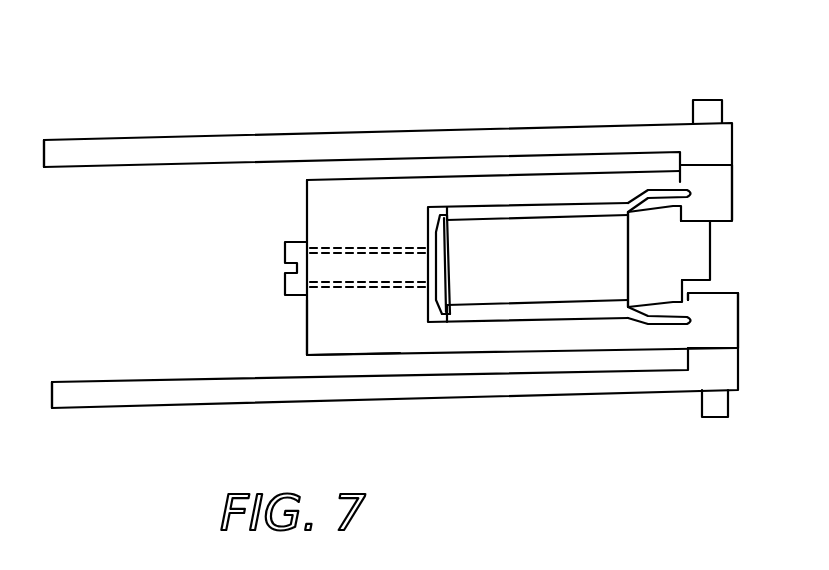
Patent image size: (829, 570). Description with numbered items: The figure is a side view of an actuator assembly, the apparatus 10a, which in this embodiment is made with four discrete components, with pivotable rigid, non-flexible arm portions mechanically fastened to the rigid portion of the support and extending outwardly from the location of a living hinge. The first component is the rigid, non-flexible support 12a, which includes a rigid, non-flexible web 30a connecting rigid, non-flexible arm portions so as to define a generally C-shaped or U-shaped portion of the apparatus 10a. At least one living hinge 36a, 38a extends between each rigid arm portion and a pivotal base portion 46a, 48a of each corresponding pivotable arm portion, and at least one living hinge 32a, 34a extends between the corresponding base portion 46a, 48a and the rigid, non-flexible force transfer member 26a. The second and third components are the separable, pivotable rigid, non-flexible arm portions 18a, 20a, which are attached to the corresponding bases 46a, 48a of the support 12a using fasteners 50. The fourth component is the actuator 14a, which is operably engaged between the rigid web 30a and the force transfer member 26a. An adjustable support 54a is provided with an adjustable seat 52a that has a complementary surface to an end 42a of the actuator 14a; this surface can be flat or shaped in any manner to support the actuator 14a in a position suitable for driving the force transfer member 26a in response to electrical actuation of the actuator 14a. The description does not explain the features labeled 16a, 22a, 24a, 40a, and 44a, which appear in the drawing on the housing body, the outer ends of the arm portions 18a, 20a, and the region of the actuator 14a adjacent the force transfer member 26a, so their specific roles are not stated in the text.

The apparatus 10a is at (365, 63).
The rigid, non-flexible support 12a is at (405, 166).
The actuator 14a is at (536, 297).
The housing 16a is at (320, 213).
The pivotable rigid, non-flexible arm portion 18a is at (102, 137).
The pivotable rigid, non-flexible arm portion 20a is at (145, 400).
The upper rail end 22a is at (78, 168).
The lower rail end 24a is at (93, 380).
The rigid, non-flexible force transfer member 26a is at (715, 268).
The rigid, non-flexible web 30a is at (313, 332).
The living hinge 32a is at (625, 222).
The living hinge 34a is at (690, 310).
The living hinge 36a is at (675, 187).
The living hinge 38a is at (683, 330).
The cavity end wall 40a is at (618, 283).
The end of the actuator 42a is at (447, 263).
The cavity wall 44a is at (630, 247).
The pivotal base portion 46a is at (730, 207).
The pivotal base portion 48a is at (743, 313).
The fasteners 50 is at (695, 100).
The adjustable seat 52a is at (452, 297).
The adjustable support 54a is at (283, 282).